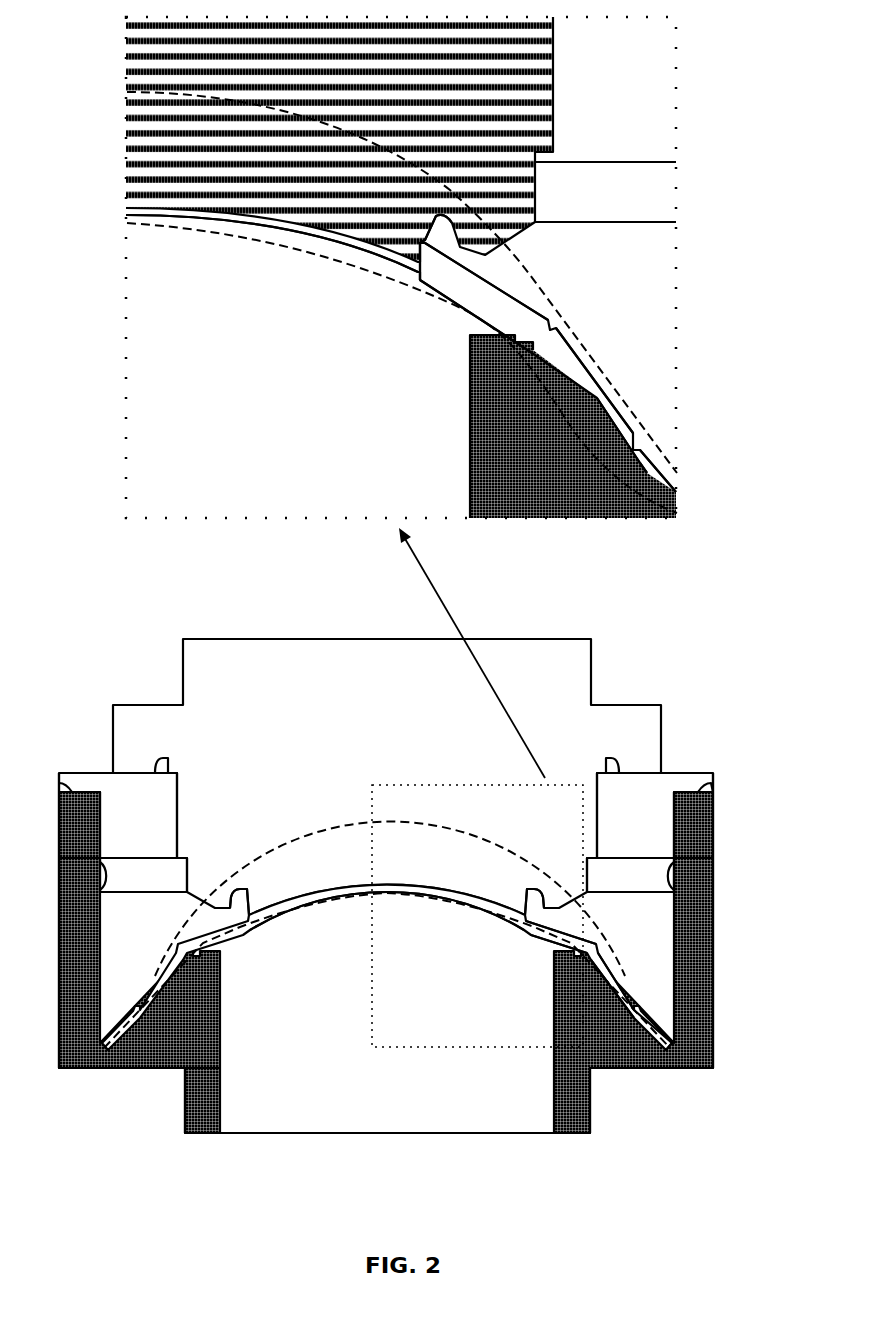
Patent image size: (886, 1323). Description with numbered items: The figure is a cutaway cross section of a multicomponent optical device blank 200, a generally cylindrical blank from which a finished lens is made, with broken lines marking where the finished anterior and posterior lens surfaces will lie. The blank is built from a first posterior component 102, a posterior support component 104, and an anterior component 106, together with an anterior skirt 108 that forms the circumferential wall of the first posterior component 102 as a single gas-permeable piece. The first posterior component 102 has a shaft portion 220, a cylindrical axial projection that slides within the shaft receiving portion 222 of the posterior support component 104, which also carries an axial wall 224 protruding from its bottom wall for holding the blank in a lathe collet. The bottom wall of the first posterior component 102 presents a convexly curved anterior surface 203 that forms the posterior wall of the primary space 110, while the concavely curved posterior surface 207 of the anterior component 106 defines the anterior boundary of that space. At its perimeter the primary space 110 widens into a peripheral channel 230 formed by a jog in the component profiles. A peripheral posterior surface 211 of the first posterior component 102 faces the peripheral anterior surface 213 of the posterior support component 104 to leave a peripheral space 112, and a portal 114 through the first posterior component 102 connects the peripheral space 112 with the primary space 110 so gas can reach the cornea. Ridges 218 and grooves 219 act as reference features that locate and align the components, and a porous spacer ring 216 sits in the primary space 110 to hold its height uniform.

The multicomponent optical device blank 200 is at (94, 640).
The first posterior component 102 is at (387, 1162).
The posterior support component 104 is at (715, 1090).
The anterior component 106 is at (364, 630).
The anterior skirt 108 is at (627, 923).
The primary space 110 is at (318, 240).
The peripheral space 112 is at (578, 378).
The portal 114 is at (480, 293).
The anterior surface 203 is at (238, 220).
The posterior surface 207 is at (277, 220).
The peripheral posterior surface 211 is at (578, 352).
The peripheral anterior surface 213 is at (602, 398).
The porous spacer ring 216 is at (337, 240).
The ridge 218 is at (647, 473).
The groove 219 is at (712, 784).
The shaft portion 220 is at (382, 1070).
The shaft receiving portion 222 is at (208, 1023).
The axial wall 224 is at (208, 1104).
The peripheral channel 230 is at (418, 275).